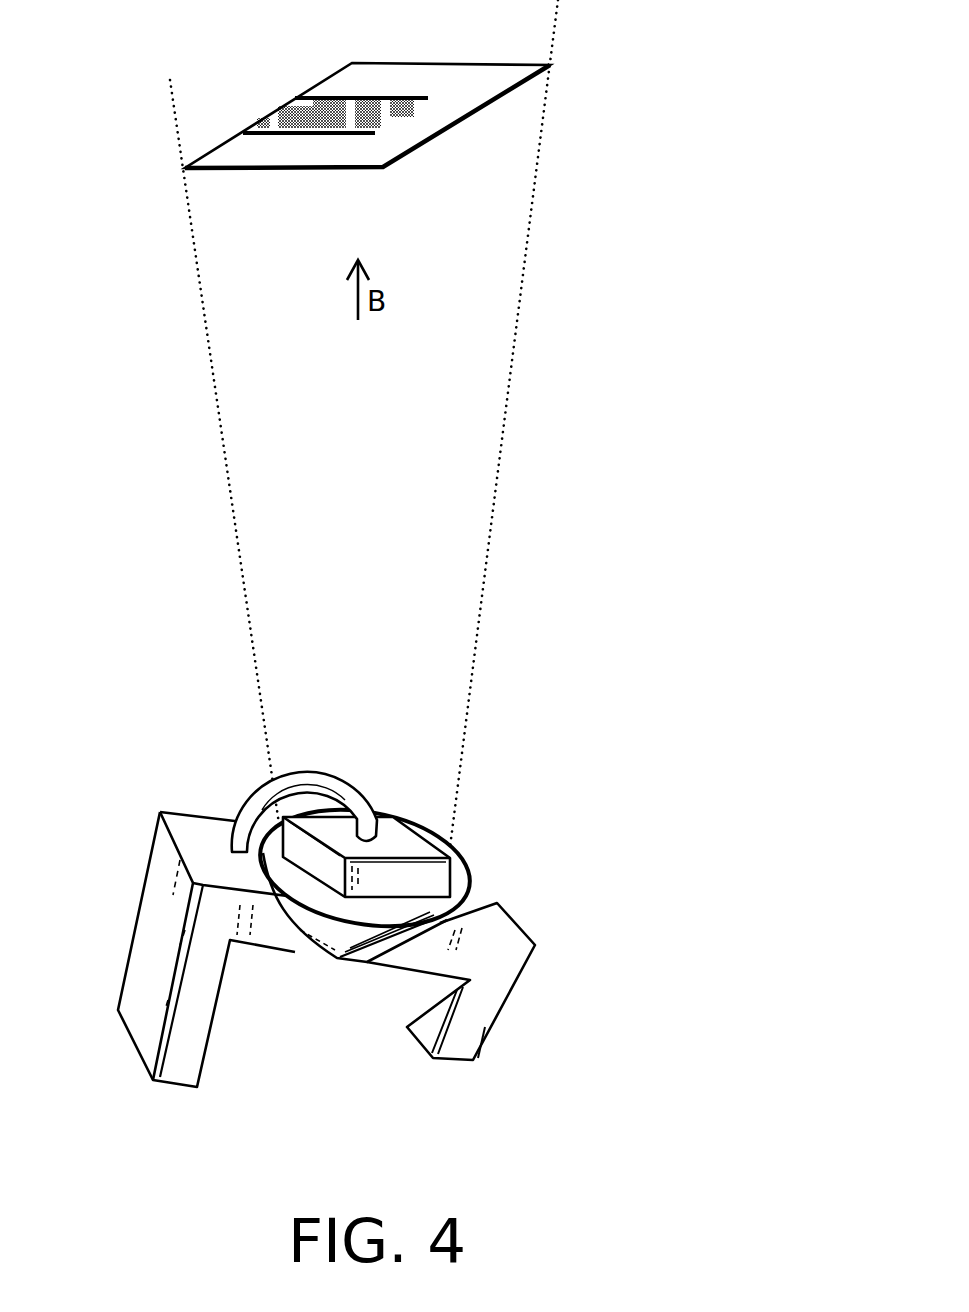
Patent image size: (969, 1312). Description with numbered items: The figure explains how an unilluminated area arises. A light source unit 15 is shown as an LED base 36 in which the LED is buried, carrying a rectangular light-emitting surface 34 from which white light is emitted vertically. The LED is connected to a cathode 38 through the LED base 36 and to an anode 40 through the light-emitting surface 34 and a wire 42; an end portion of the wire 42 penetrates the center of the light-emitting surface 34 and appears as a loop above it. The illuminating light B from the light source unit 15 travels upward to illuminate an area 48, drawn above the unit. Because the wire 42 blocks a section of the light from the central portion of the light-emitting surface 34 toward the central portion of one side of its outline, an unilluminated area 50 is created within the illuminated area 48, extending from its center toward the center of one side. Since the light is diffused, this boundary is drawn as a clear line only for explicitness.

The light source unit 15 is at (577, 861).
The light-emitting surface 34 is at (408, 850).
The LED base 36 is at (328, 945).
The cathode 38 is at (497, 967).
The anode 40 is at (162, 923).
The wire 42 is at (255, 808).
The illuminated area 48 is at (445, 82).
The unilluminated area 50 is at (340, 100).